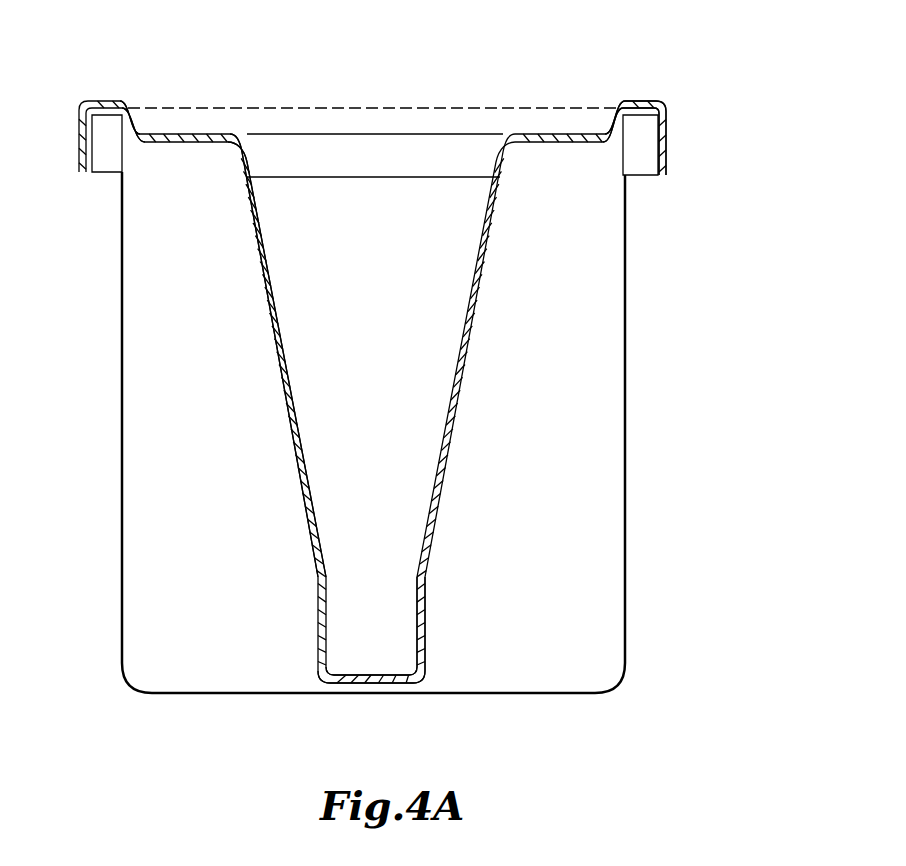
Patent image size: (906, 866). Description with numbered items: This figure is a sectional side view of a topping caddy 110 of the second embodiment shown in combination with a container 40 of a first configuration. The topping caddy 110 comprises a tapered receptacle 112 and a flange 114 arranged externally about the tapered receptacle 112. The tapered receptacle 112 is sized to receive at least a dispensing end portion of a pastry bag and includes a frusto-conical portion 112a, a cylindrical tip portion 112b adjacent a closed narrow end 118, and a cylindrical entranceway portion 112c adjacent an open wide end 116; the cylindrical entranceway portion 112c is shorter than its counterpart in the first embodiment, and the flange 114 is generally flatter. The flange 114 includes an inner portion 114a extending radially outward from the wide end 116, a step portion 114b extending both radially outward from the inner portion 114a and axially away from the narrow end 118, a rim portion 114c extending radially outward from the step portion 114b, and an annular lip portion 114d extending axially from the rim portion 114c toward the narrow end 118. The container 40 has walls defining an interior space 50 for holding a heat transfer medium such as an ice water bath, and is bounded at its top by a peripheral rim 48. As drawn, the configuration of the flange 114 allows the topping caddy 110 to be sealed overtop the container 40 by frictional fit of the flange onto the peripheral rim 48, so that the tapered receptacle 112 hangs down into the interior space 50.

The container 40 is at (389, 355).
The peripheral rim 48 is at (107, 100).
The interior space 50 is at (149, 458).
The topping caddy 110 is at (415, 387).
The tapered receptacle 112 is at (373, 396).
The frusto-conical portion 112a is at (300, 418).
The cylindrical tip portion 112b is at (410, 650).
The cylindrical entranceway portion 112c is at (250, 160).
The flange 114 is at (415, 118).
The inner portion 114a is at (567, 135).
The step portion 114b is at (157, 117).
The rim portion 114c is at (645, 102).
The annular lip portion 114d is at (668, 135).
The open wide end 116 is at (401, 143).
The closed narrow end 118 is at (360, 685).